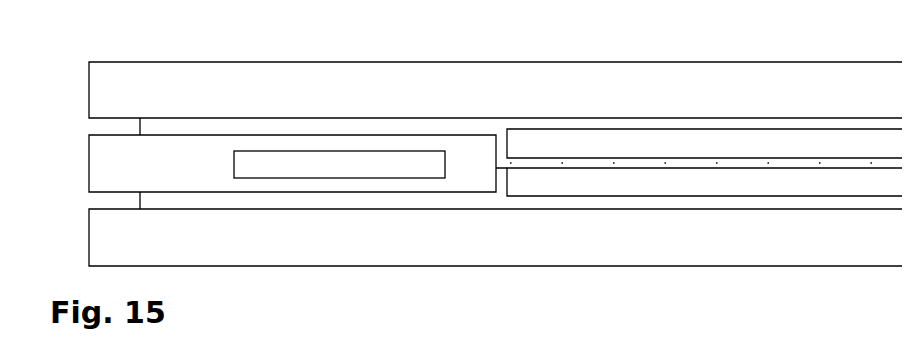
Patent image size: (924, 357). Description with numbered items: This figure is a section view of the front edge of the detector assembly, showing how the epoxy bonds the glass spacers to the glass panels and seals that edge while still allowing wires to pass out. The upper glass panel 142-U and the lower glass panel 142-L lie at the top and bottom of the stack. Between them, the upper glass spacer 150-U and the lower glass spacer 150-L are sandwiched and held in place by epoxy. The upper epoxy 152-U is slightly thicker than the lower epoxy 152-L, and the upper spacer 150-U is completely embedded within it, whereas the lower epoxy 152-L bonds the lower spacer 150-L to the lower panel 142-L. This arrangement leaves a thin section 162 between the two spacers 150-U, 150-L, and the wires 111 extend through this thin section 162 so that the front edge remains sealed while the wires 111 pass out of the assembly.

The upper glass panel 142-U is at (176, 73).
The lower glass panel 142-L is at (191, 260).
The upper epoxy 152-U is at (422, 126).
The lower epoxy 152-L is at (413, 202).
The upper glass spacer 150-U is at (616, 133).
The lower glass spacer 150-L is at (607, 189).
The thin section 162 is at (728, 158).
The wires 111 is at (757, 158).